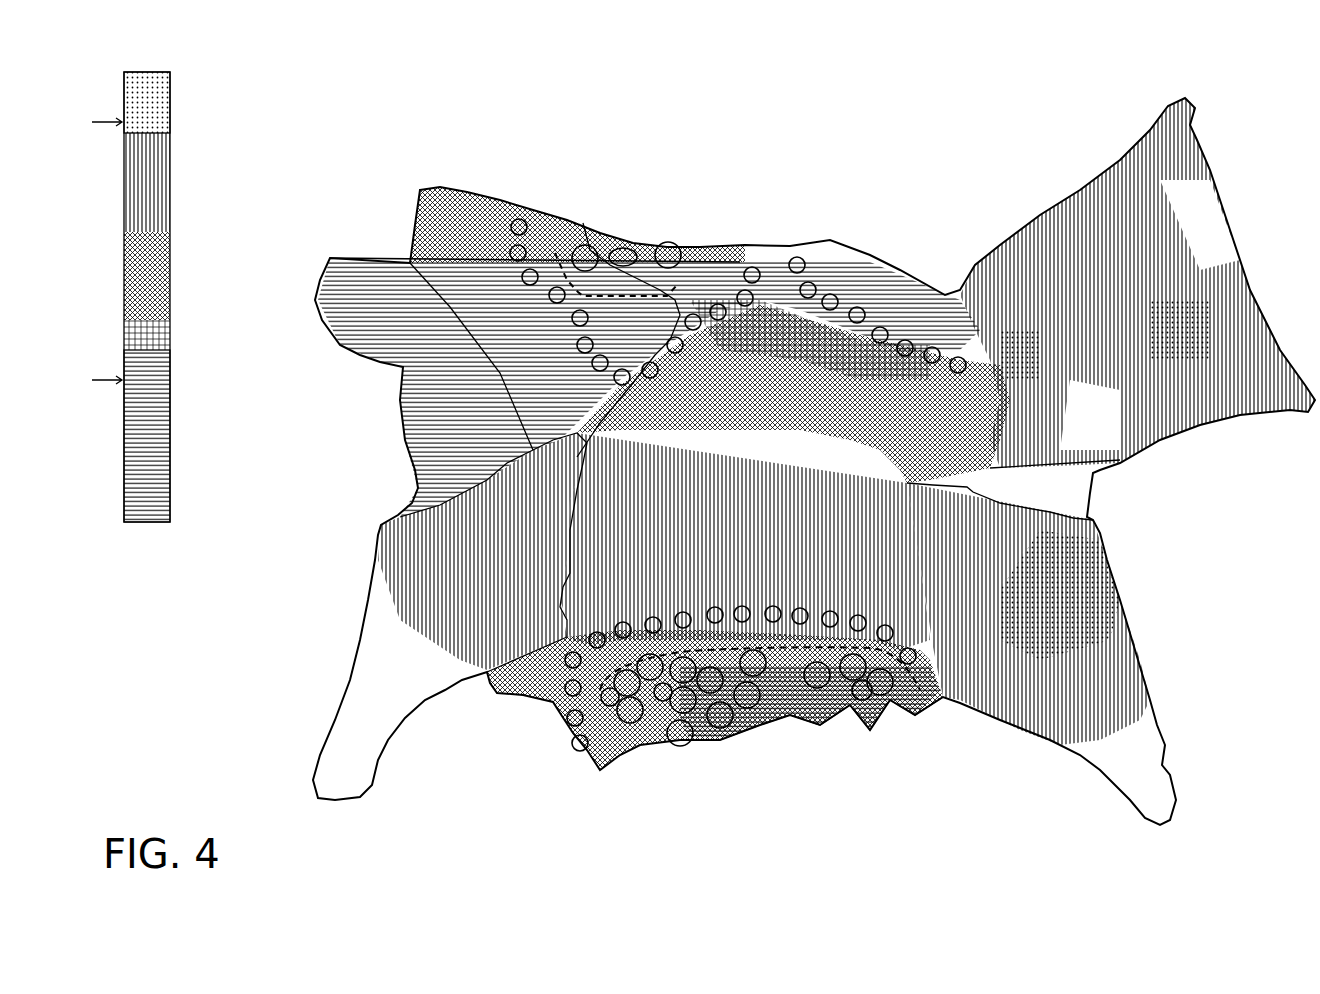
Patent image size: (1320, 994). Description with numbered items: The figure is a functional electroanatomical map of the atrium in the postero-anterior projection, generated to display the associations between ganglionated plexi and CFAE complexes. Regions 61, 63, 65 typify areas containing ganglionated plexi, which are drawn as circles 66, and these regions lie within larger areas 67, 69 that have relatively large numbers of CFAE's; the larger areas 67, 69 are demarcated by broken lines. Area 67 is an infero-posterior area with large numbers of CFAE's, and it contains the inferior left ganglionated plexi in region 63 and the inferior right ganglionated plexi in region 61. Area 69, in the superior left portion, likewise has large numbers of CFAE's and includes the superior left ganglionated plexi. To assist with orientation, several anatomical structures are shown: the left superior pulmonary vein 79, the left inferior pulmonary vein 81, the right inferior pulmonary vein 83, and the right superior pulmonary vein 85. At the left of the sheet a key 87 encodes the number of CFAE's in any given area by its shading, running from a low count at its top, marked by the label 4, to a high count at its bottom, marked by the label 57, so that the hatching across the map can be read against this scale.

The scale legend top (low value) 4 is at (147, 90).
The scale legend bottom (high value) 57 is at (147, 453).
The key 87 is at (172, 165).
The left superior pulmonary vein 79 is at (457, 313).
The circles 66 is at (577, 250).
The region 65 is at (612, 233).
The area 69 is at (716, 244).
The right superior pulmonary vein 85 is at (1125, 277).
The right inferior pulmonary vein 83 is at (1063, 610).
The left inferior pulmonary vein 81 is at (468, 623).
The area 67 is at (578, 753).
The region 63 is at (730, 740).
The region 61 is at (890, 713).